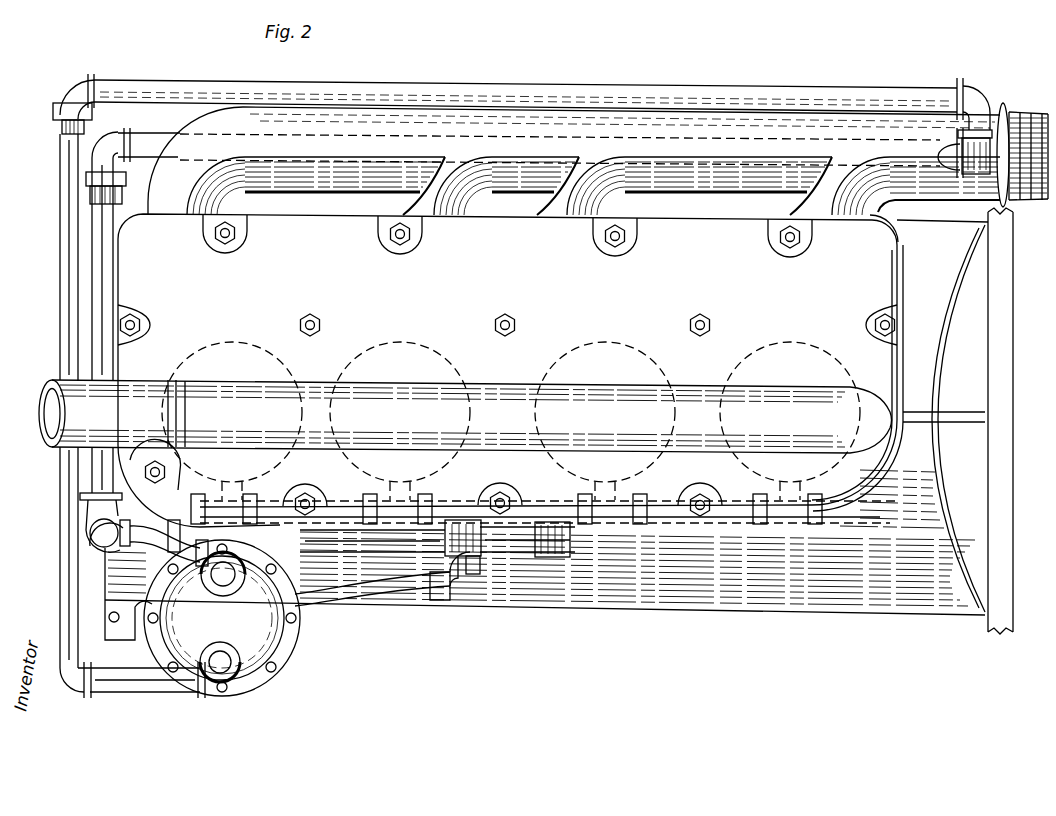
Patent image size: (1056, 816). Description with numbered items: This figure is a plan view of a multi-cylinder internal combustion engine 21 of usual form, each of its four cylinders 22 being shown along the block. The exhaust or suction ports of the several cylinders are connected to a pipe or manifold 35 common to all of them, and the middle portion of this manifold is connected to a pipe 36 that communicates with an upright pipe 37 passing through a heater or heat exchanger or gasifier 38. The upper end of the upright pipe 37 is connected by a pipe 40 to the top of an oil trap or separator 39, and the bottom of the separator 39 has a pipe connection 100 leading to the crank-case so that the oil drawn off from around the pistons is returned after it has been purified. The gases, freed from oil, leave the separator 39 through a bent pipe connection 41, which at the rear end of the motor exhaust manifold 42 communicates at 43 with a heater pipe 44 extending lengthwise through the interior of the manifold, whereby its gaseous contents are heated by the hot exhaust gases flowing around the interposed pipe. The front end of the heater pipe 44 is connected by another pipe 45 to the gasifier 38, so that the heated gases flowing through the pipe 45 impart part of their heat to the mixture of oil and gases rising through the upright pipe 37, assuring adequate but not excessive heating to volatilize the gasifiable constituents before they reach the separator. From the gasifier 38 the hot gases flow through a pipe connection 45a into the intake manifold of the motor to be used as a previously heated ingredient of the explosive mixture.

The internal combustion engine 21 is at (471, 370).
The cylinder 22 is at (263, 345).
The manifold 35 is at (660, 505).
The pipe 36 is at (412, 566).
The upright pipe 37 is at (96, 538).
The heater 38 is at (90, 505).
The oil trap 39 is at (222, 618).
The pipe 40 is at (161, 552).
The bent pipe connection 41 is at (523, 89).
The exhaust manifold 42 is at (680, 130).
The connection 43 is at (992, 112).
The heater pipe 44 is at (145, 132).
The pipe 45 is at (92, 330).
The pipe connection 45a is at (362, 540).
The pipe connection 100 is at (378, 600).